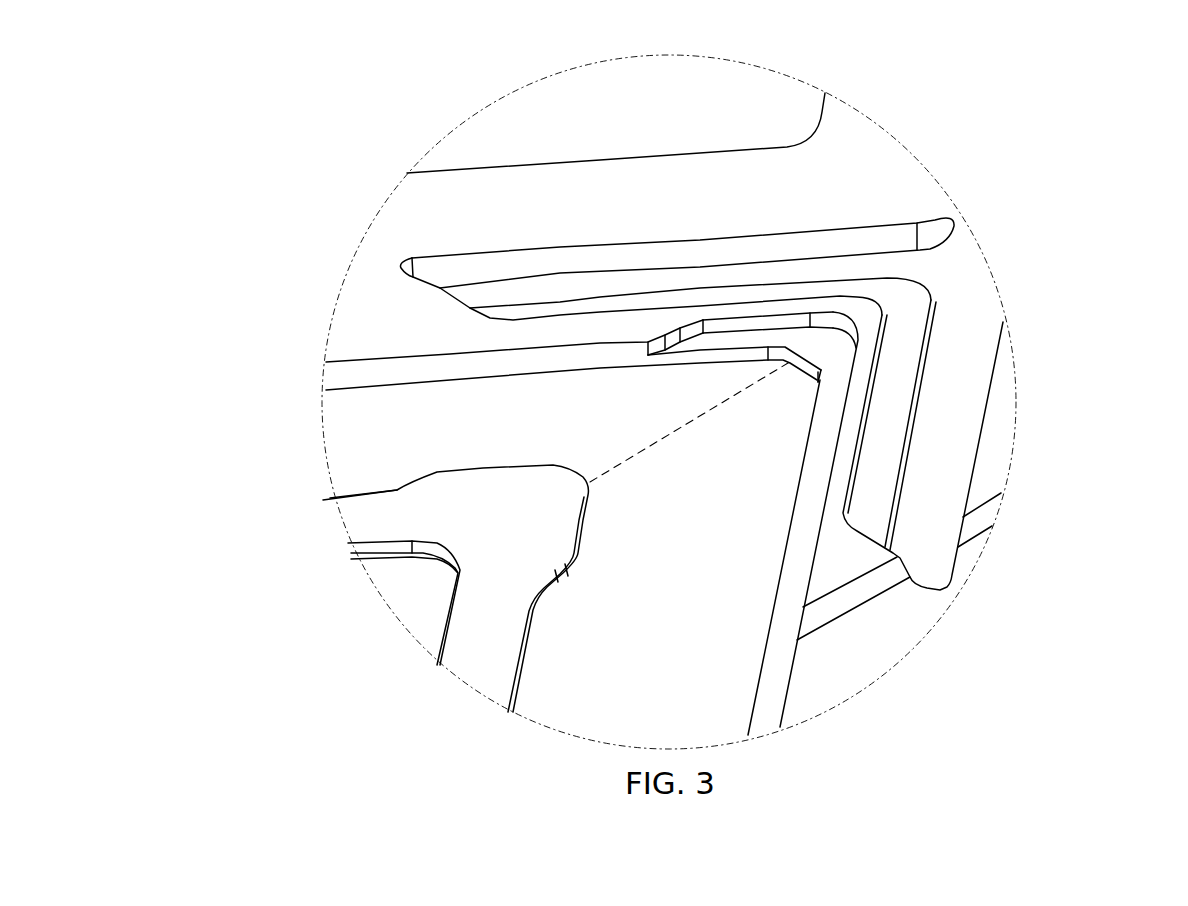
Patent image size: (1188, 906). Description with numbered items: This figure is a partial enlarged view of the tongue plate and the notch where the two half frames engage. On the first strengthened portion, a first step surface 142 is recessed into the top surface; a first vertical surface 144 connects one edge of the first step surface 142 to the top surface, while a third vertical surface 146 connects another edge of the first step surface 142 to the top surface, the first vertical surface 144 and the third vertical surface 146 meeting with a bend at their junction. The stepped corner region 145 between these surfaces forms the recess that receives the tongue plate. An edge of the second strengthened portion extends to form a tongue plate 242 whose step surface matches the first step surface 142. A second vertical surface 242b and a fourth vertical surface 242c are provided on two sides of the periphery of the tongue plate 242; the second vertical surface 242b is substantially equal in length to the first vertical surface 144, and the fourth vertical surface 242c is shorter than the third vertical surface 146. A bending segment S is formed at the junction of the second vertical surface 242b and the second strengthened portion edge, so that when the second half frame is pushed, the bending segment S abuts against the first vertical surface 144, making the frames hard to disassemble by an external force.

The first step surface 142 is at (833, 343).
The first vertical surface 144 is at (755, 317).
The step portion 145 is at (670, 332).
The third vertical surface 146 is at (838, 447).
The tongue plate 242 is at (530, 518).
The second vertical surface 242b is at (483, 468).
The fourth vertical surface 242c is at (583, 527).
The bending segment S is at (398, 490).